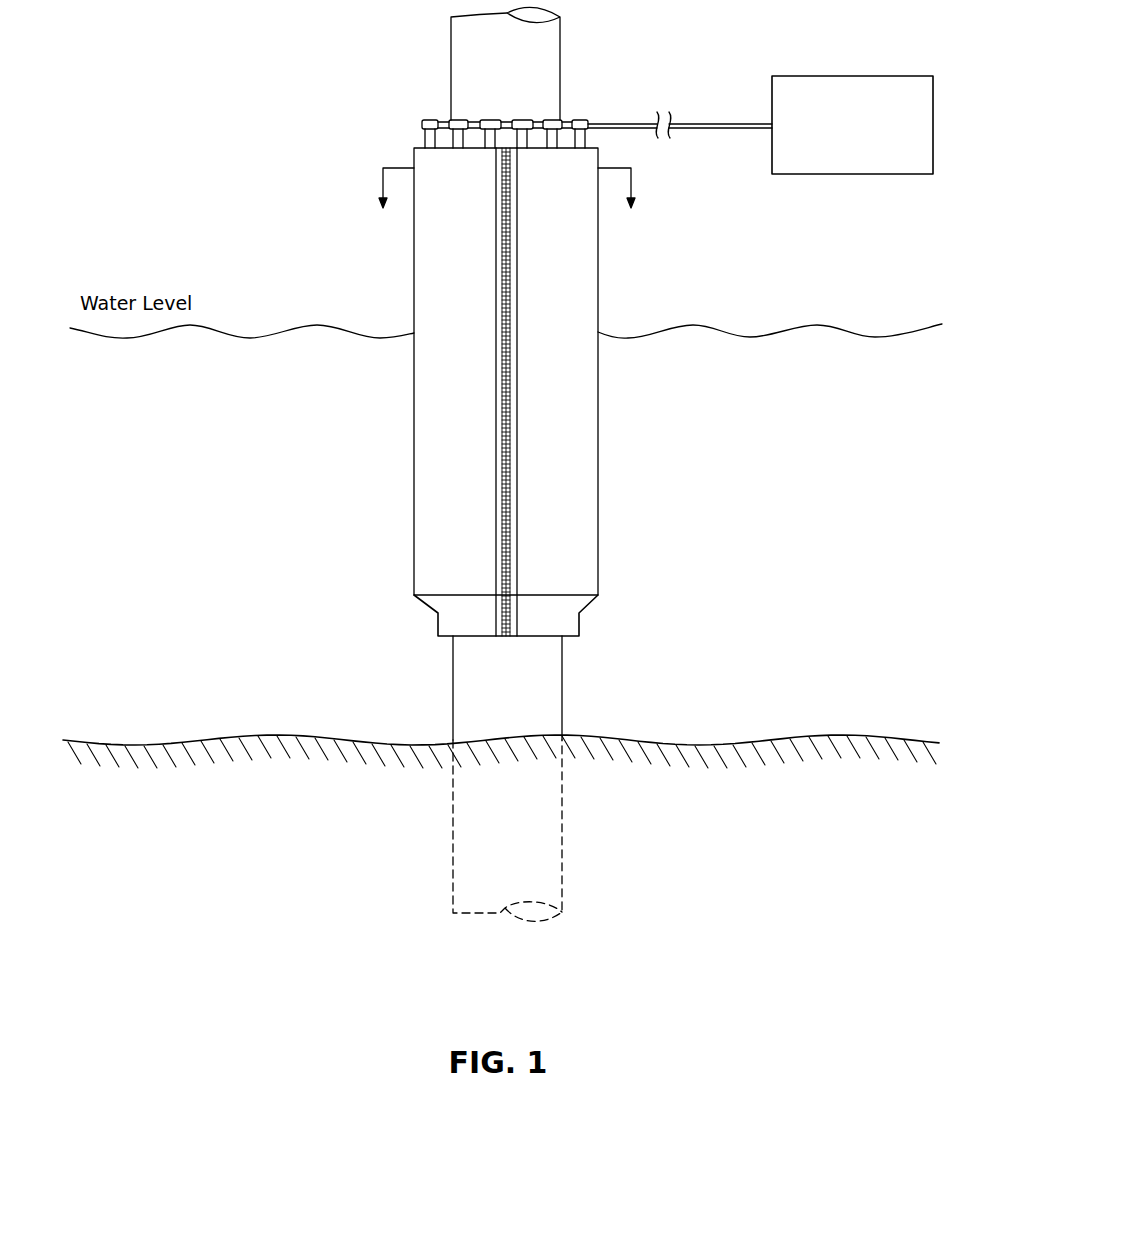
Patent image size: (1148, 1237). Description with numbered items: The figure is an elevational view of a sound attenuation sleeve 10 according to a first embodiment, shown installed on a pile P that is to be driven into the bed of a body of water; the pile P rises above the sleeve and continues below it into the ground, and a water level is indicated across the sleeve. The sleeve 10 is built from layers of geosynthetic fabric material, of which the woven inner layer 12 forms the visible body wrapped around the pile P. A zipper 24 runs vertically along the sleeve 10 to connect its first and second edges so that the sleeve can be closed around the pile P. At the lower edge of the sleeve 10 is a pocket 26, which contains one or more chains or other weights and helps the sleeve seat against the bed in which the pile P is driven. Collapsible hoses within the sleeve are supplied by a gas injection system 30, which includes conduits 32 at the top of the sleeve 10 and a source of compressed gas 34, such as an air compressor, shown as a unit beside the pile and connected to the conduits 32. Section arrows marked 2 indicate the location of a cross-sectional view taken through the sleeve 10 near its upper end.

The pile P is at (561, 57).
The sound attenuation sleeve 10 is at (507, 369).
The inner layer of woven geosynthetic fabric 12 is at (598, 247).
The zipper 24 is at (517, 325).
The pocket 26 is at (579, 623).
The gas injection system 30 is at (620, 120).
The conduits 32 is at (418, 119).
The source of compressed gas 34 is at (808, 76).
The section line 2- 2 is at (507, 188).